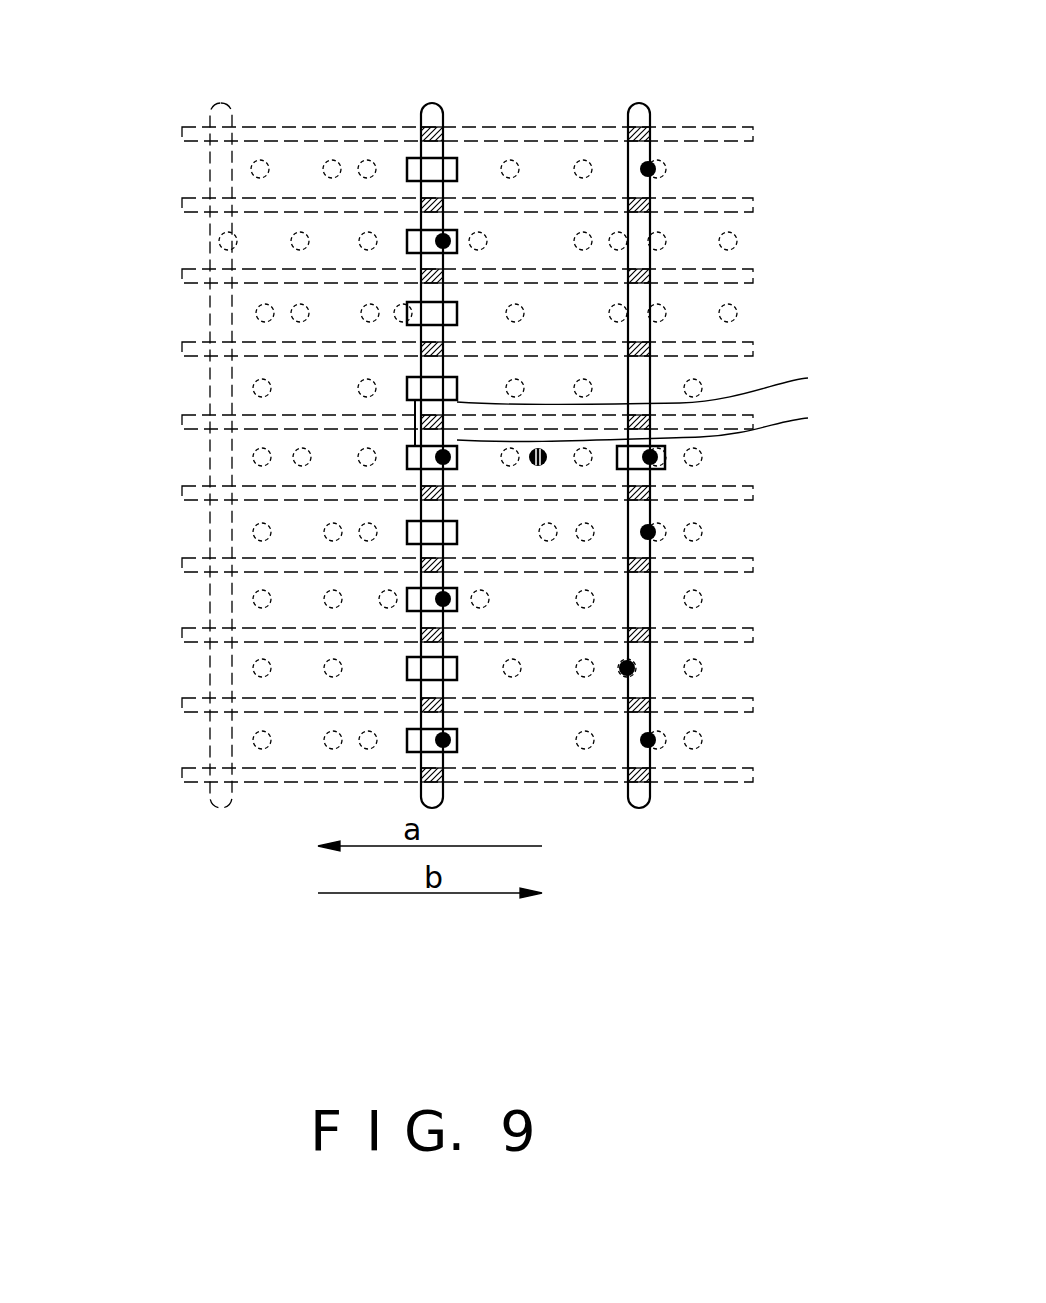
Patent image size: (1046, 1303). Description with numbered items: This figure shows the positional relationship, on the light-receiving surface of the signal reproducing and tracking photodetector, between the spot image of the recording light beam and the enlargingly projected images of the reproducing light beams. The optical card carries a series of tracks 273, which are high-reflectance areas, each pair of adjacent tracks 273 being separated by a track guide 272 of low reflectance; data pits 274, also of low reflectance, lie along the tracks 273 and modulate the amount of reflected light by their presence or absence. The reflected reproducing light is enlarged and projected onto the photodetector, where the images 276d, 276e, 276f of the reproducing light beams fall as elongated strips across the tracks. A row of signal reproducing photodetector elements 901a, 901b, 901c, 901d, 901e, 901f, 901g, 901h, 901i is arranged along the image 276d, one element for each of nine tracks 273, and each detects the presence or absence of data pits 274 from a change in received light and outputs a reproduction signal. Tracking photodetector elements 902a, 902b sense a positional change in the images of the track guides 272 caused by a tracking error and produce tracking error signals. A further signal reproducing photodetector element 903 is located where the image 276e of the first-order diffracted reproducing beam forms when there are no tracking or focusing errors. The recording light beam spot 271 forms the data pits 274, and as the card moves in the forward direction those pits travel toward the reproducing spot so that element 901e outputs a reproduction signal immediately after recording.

The recording light beam spot 271 is at (538, 467).
The track guide 272 is at (727, 128).
The track 273 is at (730, 168).
The data pit 274 is at (513, 158).
The image of reproducing light beam 276d is at (430, 103).
The image of reproducing light beam 276e is at (640, 103).
The image of reproducing light beam 276f is at (215, 100).
The signal reproducing photodetector element 901a is at (407, 179).
The signal reproducing photodetector element 901b is at (407, 251).
The signal reproducing photodetector element 901c is at (407, 323).
The signal reproducing photodetector element 901d is at (407, 398).
The signal reproducing photodetector element 901e is at (407, 467).
The signal reproducing photodetector element 901f is at (407, 542).
The signal reproducing photodetector element 901g is at (407, 609).
The signal reproducing photodetector element 901h is at (407, 678).
The signal reproducing photodetector element 901i is at (407, 750).
The tracking photodetector element 902a is at (651, 405).
The tracking photodetector element 902b is at (673, 422).
The signal reproducing photodetector element 903 is at (665, 462).